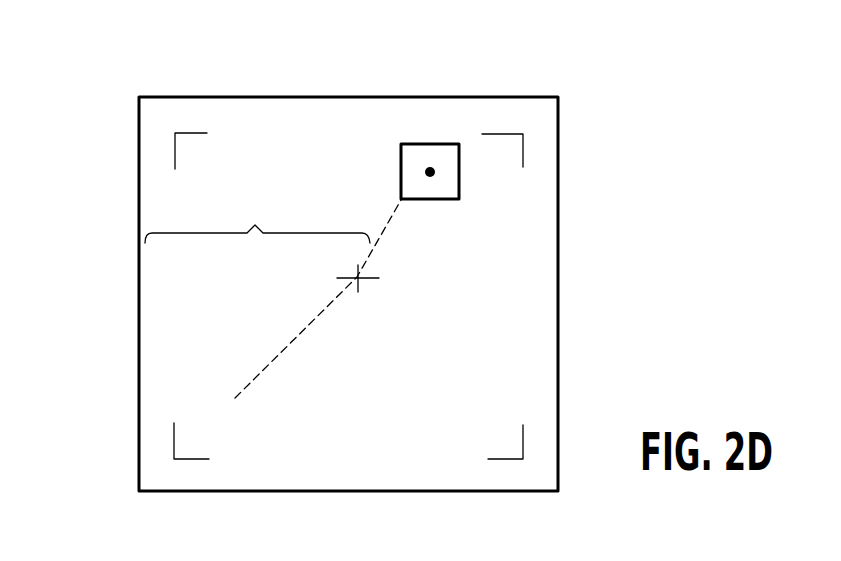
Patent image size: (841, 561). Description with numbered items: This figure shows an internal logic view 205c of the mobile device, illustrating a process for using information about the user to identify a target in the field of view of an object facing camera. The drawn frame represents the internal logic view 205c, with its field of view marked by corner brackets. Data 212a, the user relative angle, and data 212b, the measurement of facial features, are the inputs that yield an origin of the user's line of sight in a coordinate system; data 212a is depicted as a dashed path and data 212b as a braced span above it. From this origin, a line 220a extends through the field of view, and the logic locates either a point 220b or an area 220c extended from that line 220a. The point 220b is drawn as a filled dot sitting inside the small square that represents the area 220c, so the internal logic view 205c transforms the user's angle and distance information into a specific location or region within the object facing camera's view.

The internal logic view 205c is at (139, 137).
The area 220c is at (432, 144).
The point 220b is at (435, 175).
The line 220a is at (387, 230).
The data (user relative angle) 212a is at (292, 342).
The data (measurement of facial features) 212b is at (315, 232).